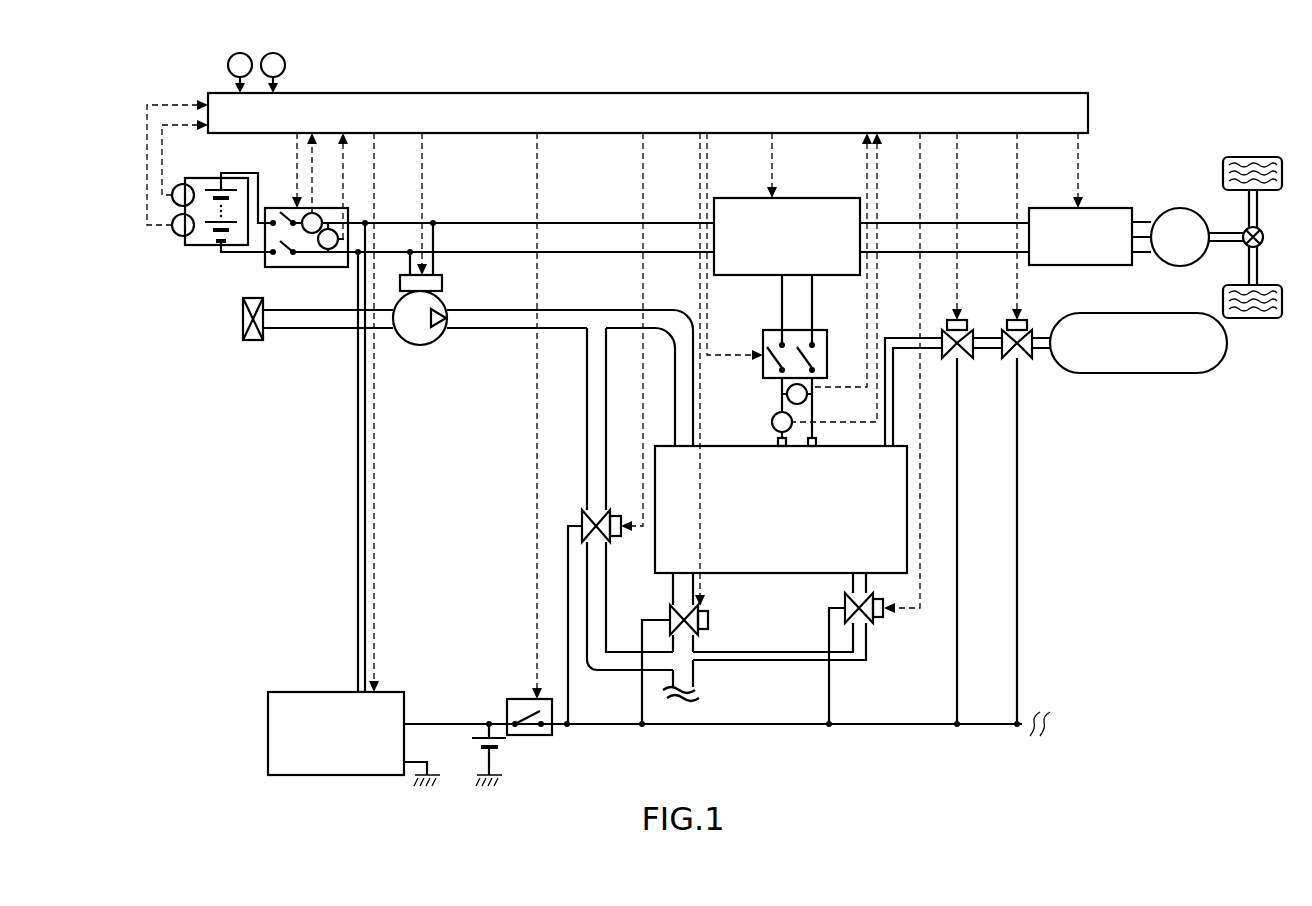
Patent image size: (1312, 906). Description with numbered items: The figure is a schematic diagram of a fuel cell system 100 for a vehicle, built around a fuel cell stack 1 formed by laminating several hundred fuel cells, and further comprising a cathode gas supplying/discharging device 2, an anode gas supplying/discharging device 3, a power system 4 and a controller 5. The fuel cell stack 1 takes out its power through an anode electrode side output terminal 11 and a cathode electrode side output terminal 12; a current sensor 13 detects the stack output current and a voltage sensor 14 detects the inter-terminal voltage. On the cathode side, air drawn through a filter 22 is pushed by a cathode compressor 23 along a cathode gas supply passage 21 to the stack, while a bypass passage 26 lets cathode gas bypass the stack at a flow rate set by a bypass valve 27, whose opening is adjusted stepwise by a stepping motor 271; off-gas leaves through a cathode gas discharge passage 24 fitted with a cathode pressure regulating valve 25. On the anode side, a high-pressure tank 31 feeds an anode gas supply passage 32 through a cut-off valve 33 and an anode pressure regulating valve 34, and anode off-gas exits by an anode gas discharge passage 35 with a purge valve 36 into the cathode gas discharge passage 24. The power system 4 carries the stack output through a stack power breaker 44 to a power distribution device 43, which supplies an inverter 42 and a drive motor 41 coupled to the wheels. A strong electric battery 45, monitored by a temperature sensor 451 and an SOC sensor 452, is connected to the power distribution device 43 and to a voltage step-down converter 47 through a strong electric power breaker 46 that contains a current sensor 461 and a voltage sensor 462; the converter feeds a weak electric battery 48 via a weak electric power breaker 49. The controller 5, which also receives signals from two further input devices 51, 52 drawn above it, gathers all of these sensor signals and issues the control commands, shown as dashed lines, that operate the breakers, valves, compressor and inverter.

The fuel cell stack 1 is at (904, 446).
The cathode gas supplying/discharging device 2 is at (272, 349).
The anode gas supplying/discharging device 3 is at (1053, 365).
The power system 4 is at (1110, 170).
The controller 5 is at (1070, 93).
The anode electrode side output terminal 11 is at (778, 440).
The cathode electrode side output terminal 12 is at (816, 438).
The current sensor 13 is at (777, 404).
The voltage sensor 14 is at (808, 400).
The cathode gas supply passage 21 is at (318, 330).
The filter 22 is at (243, 318).
The cathode compressor 23 is at (419, 346).
The cathode gas discharge passage 24 is at (700, 644).
The cathode pressure regulating valve 25 is at (667, 614).
The bypass passage 26 is at (587, 395).
The bypass valve 27 is at (585, 512).
The stepping motor 271 is at (615, 536).
The high-pressure tank 31 is at (1150, 374).
The anode gas supply passage 32 is at (899, 337).
The cut-off valve 33 is at (1013, 360).
The anode pressure regulating valve 34 is at (960, 360).
The anode gas discharge passage 35 is at (869, 645).
The purge valve 36 is at (869, 596).
The drive motor 41 is at (1179, 208).
The inverter 42 is at (1107, 266).
The power distribution device 43 is at (802, 198).
The stack power breaker 44 is at (772, 328).
The strong electric battery 45 is at (205, 178).
The temperature sensor 451 is at (174, 204).
The SOC sensor 452 is at (178, 236).
The strong electric power breaker 46 is at (292, 267).
The current sensor 461 is at (300, 195).
The voltage sensor 462 is at (328, 250).
The voltage step-down converter 47 is at (328, 692).
The weak electric battery 48 is at (495, 750).
The weak electric power breaker 49 is at (539, 735).
The ignition switch 51 is at (228, 66).
The accelerator sensor 52 is at (285, 66).
The fuel cell system 100 is at (1223, 120).